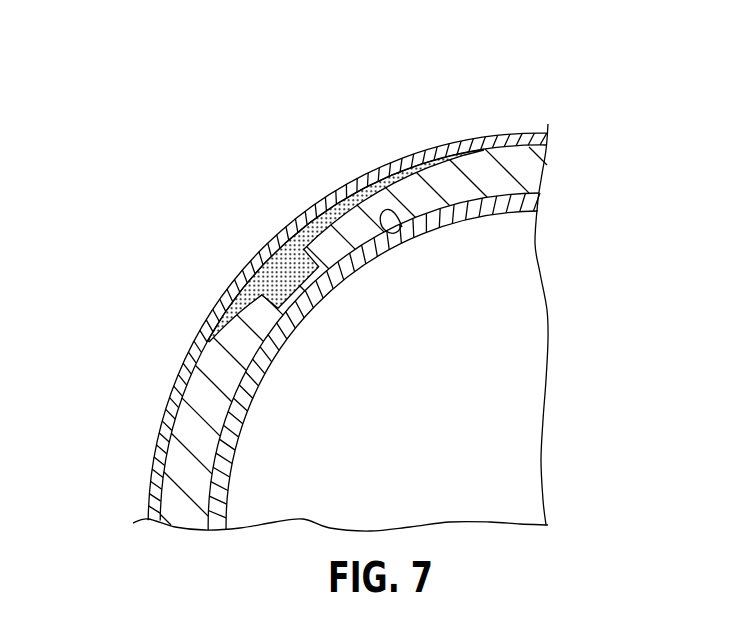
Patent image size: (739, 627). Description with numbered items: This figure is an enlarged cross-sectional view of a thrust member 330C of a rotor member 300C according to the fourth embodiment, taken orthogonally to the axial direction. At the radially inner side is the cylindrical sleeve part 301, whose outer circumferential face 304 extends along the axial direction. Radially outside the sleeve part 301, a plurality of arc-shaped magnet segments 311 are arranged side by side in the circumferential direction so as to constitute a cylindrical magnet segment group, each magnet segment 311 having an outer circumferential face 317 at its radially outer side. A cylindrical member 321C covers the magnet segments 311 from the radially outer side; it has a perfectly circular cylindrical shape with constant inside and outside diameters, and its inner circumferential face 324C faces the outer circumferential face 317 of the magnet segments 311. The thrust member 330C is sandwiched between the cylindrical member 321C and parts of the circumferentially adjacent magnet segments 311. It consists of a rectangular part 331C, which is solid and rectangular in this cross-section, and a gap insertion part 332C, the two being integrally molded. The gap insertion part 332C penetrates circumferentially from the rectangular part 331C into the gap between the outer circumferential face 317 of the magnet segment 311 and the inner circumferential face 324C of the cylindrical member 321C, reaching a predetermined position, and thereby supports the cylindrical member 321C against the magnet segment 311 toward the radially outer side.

The rotor member 300C is at (152, 140).
The sleeve part 301 is at (472, 220).
The outer circumferential face 304 is at (402, 227).
The magnet segment 311 is at (483, 168).
The outer circumferential face 317 is at (325, 222).
The cylindrical member 321C is at (362, 178).
The inner circumferential face 324C is at (167, 502).
The thrust member 330C is at (268, 256).
The rectangular part 331C is at (277, 310).
The gap insertion part 332C is at (310, 227).